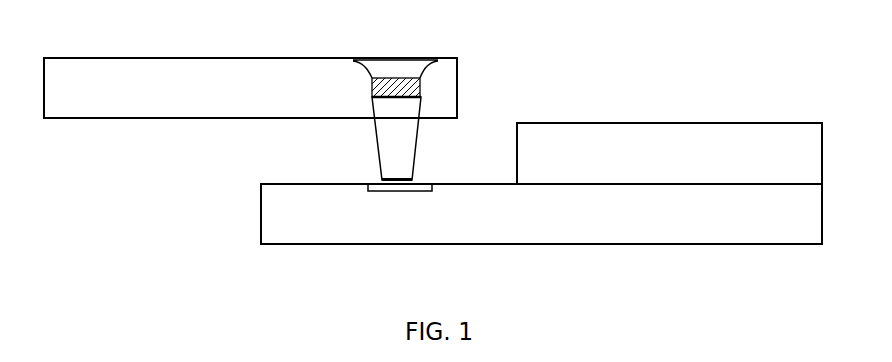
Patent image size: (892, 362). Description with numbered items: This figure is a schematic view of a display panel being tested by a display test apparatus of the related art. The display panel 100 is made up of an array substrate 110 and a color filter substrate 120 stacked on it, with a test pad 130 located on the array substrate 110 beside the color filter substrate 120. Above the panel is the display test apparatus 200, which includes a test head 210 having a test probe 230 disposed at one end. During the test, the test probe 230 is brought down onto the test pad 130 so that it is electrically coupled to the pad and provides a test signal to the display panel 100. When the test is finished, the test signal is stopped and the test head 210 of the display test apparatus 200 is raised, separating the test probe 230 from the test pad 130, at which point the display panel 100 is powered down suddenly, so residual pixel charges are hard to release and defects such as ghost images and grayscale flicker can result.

The display panel 100 is at (541, 202).
The array substrate 110 is at (541, 214).
The color filter substrate 120 is at (669, 153).
The test pad 130 is at (403, 194).
The display test apparatus 200 is at (250, 96).
The test head 210 is at (250, 88).
The test probe 230 is at (399, 57).